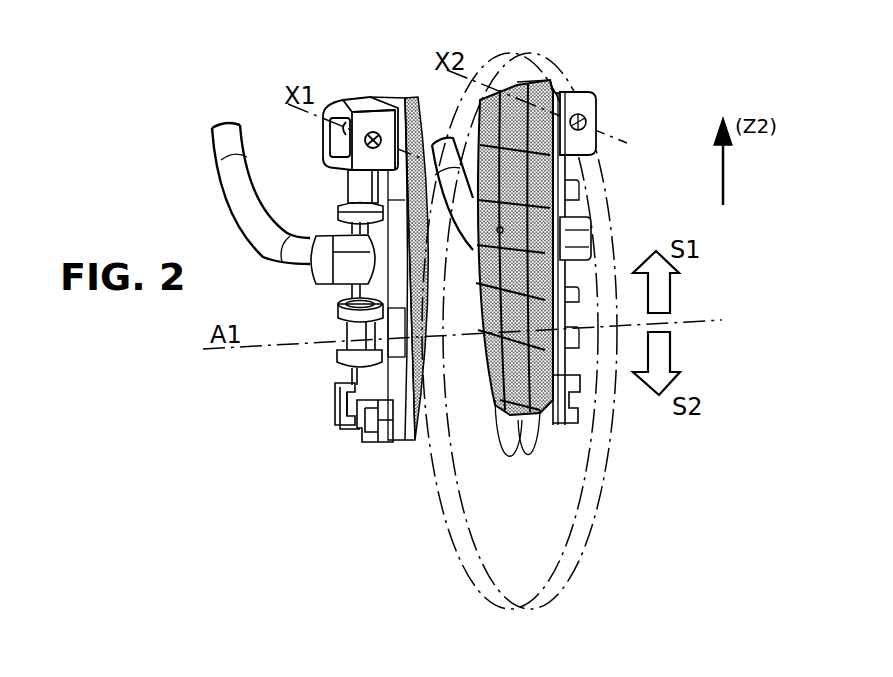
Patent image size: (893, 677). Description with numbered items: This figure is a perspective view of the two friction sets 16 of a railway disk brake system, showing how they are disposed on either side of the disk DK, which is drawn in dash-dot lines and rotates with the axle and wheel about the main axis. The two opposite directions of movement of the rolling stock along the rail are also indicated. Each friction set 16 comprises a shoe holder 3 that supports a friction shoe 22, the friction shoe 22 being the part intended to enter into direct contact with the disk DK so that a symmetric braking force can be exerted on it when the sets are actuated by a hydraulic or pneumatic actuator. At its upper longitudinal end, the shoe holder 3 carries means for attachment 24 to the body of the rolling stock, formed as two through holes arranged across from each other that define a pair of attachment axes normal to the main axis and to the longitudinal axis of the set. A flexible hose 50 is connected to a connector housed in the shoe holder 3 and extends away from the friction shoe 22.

The shoe holder 3 is at (340, 360).
The friction set 16 is at (362, 437).
The friction shoe 22 is at (413, 428).
The means for attachment 24 is at (358, 103).
The flexible hose 50 is at (238, 192).
The disk DK is at (593, 488).